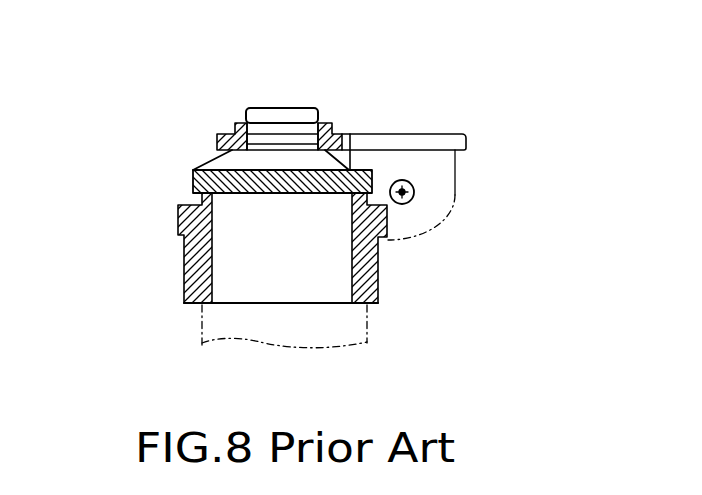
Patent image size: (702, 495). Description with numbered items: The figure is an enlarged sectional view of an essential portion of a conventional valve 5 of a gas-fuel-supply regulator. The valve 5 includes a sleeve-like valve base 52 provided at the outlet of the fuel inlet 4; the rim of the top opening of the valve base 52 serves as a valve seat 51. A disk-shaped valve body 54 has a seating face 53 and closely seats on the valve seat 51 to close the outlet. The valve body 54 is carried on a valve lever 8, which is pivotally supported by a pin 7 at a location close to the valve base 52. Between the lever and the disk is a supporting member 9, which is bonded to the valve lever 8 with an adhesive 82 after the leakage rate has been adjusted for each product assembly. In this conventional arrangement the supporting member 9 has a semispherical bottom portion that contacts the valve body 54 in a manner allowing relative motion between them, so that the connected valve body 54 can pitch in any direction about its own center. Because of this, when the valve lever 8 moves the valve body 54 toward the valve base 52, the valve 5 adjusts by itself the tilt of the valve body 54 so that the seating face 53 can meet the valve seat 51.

The fuel inlet 4 is at (237, 323).
The valve 5 is at (158, 211).
The pin 7 is at (414, 192).
The valve lever 8 is at (433, 135).
The supporting member 9 is at (270, 112).
The valve seat 51 is at (296, 182).
The valve base 52 is at (183, 258).
The seating face 53 is at (338, 193).
The valve body 54 is at (193, 173).
The adhesive 82 is at (322, 125).